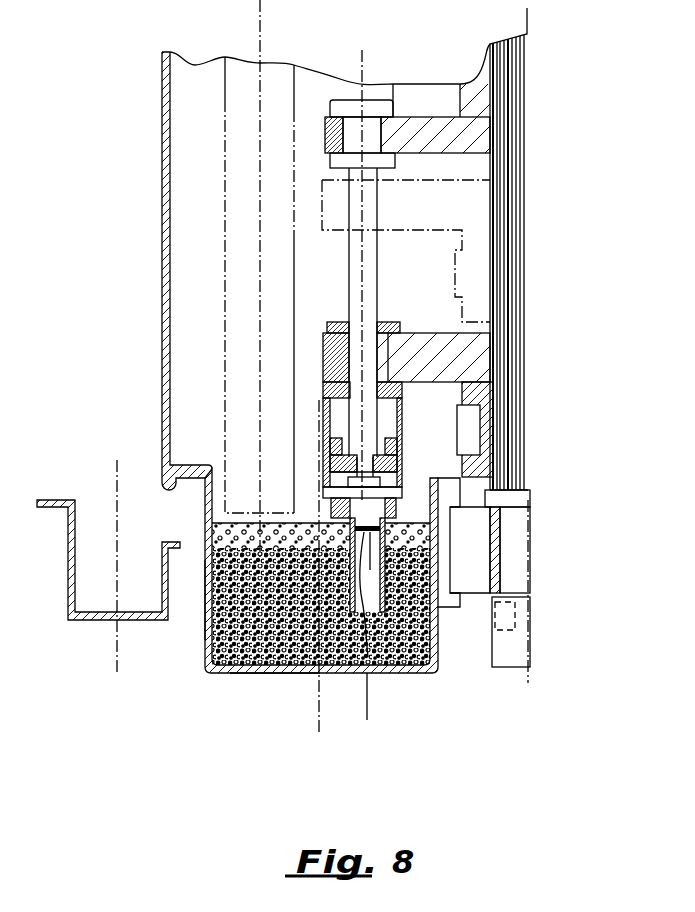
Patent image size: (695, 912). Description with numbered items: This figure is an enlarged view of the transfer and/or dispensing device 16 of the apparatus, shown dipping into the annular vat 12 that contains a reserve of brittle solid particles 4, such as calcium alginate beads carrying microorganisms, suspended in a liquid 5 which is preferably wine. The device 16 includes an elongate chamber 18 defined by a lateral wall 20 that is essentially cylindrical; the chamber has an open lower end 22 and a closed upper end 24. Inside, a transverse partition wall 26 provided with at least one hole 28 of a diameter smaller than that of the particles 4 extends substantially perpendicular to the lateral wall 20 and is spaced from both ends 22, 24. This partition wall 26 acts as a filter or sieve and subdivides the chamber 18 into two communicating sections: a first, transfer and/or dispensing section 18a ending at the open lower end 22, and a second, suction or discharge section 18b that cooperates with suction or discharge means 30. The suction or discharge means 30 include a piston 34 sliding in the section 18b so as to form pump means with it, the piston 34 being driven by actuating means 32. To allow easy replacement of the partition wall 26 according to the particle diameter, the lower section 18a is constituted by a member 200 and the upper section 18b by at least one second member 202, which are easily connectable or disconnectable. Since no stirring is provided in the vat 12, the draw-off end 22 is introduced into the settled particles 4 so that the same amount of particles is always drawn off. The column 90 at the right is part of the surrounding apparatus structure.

The brittle solid particles 4 is at (213, 670).
The liquid 5 is at (212, 622).
The annular vat 12 is at (390, 672).
The transfer and/or dispensing device 16 is at (306, 437).
The elongate chamber 18 is at (401, 472).
The transfer and/or dispensing section 18a is at (368, 572).
The suction or discharge section 18b is at (380, 412).
The lateral wall 20 is at (388, 424).
The open lower end 22 is at (350, 622).
The closed upper end 24 is at (397, 322).
The transverse partition wall 26 is at (364, 523).
The hole 28 is at (368, 668).
The suction or discharge means 30 is at (387, 220).
The actuating means 32 is at (488, 206).
The piston 34 is at (363, 288).
The column 90 is at (512, 92).
The member 200 is at (386, 526).
The second member 202 is at (323, 400).